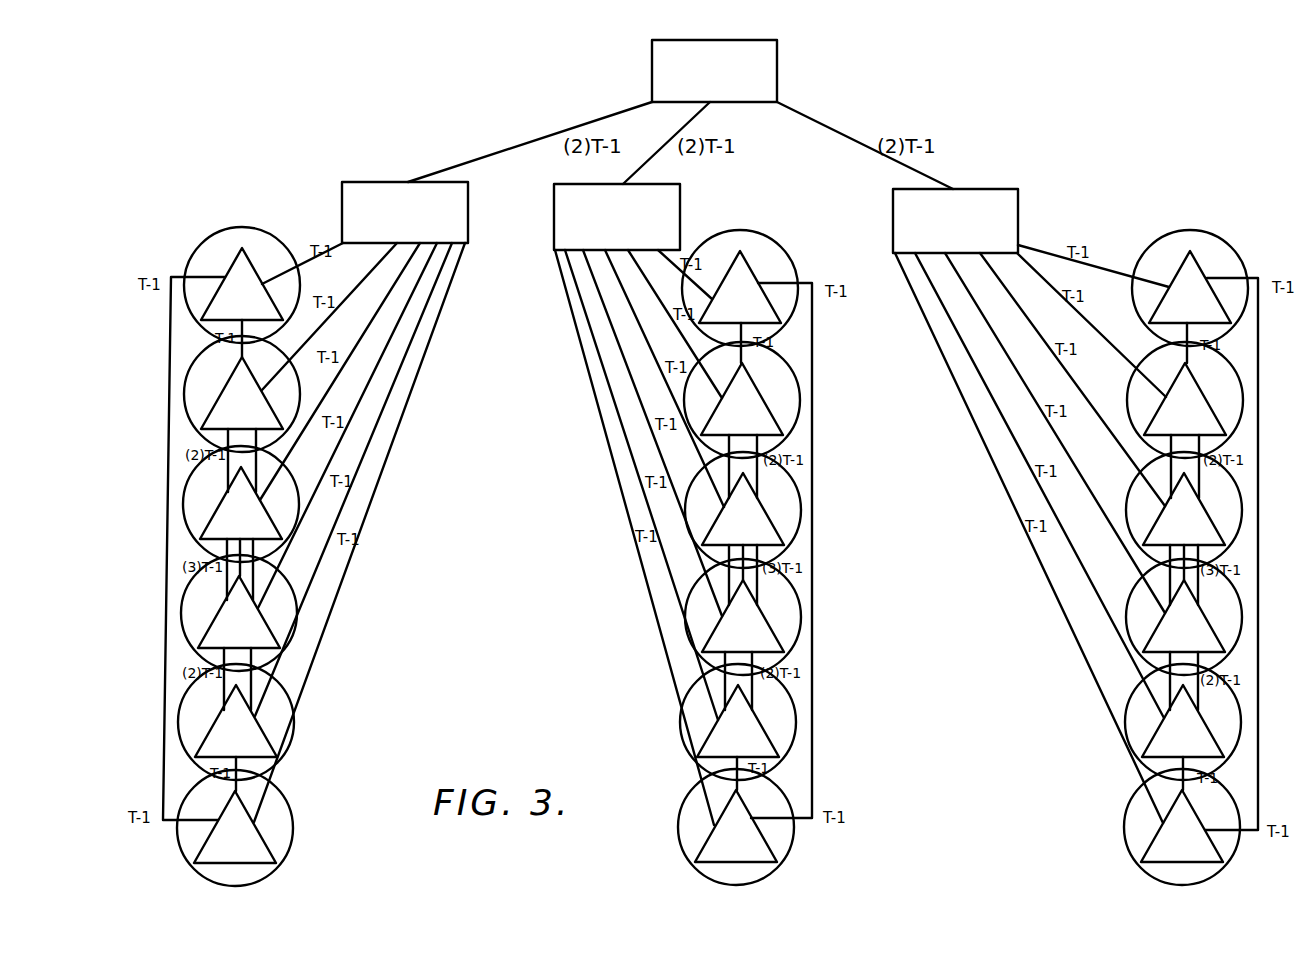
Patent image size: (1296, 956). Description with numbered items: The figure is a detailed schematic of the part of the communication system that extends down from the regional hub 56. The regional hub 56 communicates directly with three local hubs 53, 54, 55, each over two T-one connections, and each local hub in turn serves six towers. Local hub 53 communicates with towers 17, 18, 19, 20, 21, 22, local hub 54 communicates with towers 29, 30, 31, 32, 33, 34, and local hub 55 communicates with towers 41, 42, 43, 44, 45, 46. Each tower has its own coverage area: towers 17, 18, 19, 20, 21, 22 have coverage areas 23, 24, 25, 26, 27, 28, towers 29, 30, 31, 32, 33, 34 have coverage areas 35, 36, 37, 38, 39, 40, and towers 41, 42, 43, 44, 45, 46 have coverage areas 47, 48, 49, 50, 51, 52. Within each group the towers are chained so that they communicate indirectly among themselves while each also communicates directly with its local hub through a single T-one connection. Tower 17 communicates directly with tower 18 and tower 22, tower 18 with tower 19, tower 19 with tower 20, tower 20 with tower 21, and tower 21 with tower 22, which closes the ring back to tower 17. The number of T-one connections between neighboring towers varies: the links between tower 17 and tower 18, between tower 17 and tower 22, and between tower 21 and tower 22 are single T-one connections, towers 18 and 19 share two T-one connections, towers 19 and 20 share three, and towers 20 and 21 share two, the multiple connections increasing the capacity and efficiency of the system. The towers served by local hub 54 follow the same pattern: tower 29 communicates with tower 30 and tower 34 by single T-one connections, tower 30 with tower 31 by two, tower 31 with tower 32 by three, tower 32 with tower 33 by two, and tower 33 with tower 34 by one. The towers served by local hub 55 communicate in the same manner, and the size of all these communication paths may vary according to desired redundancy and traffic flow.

The tower 17 is at (226, 311).
The tower 18 is at (226, 420).
The tower 19 is at (225, 530).
The tower 20 is at (223, 639).
The tower 21 is at (220, 748).
The tower 22 is at (219, 854).
The coverage area 23 is at (226, 273).
The coverage area 24 is at (226, 382).
The coverage area 25 is at (225, 492).
The coverage area 26 is at (223, 601).
The coverage area 27 is at (220, 710).
The coverage area 28 is at (219, 816).
The tower 29 is at (724, 314).
The tower 30 is at (726, 426).
The tower 31 is at (727, 536).
The tower 32 is at (727, 643).
The tower 33 is at (722, 748).
The tower 34 is at (720, 853).
The coverage area 35 is at (787, 278).
The coverage area 36 is at (790, 390).
The coverage area 37 is at (791, 500).
The coverage area 38 is at (791, 607).
The coverage area 39 is at (786, 712).
The coverage area 40 is at (784, 817).
The tower 41 is at (1174, 314).
The tower 42 is at (1169, 426).
The tower 43 is at (1168, 536).
The tower 44 is at (1168, 643).
The tower 45 is at (1167, 748).
The tower 46 is at (1166, 853).
The coverage area 47 is at (1238, 277).
The coverage area 48 is at (1233, 390).
The coverage area 49 is at (1232, 500).
The coverage area 50 is at (1232, 607).
The coverage area 51 is at (1231, 712).
The coverage area 52 is at (1230, 817).
The local hub 53 is at (421, 232).
The local hub 54 is at (633, 236).
The local hub 55 is at (975, 241).
The regional hub 56 is at (730, 93).